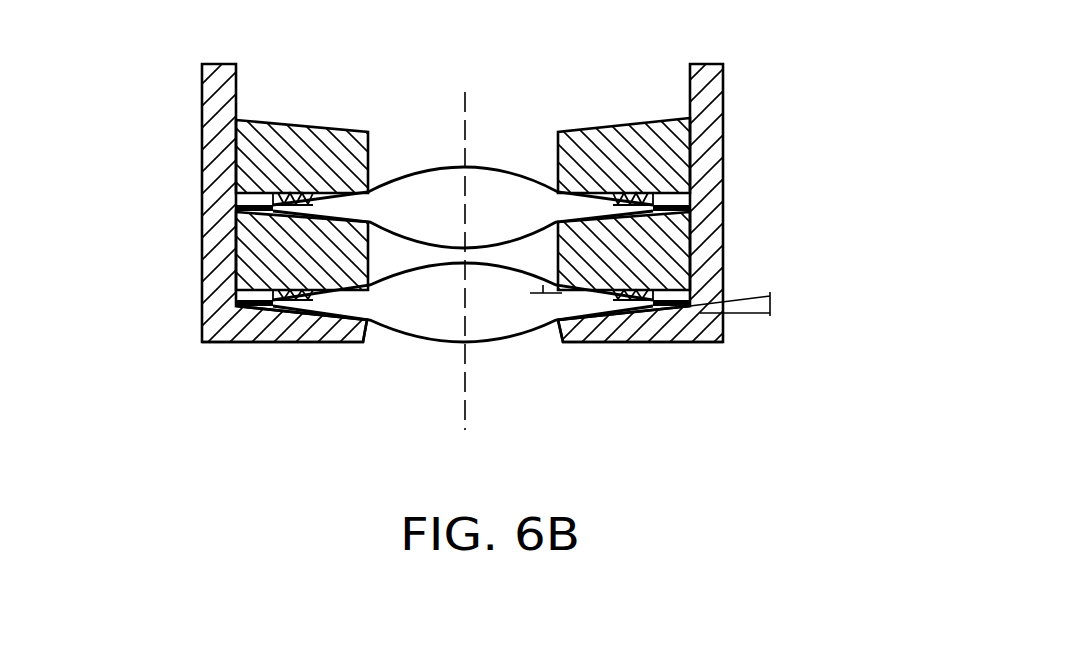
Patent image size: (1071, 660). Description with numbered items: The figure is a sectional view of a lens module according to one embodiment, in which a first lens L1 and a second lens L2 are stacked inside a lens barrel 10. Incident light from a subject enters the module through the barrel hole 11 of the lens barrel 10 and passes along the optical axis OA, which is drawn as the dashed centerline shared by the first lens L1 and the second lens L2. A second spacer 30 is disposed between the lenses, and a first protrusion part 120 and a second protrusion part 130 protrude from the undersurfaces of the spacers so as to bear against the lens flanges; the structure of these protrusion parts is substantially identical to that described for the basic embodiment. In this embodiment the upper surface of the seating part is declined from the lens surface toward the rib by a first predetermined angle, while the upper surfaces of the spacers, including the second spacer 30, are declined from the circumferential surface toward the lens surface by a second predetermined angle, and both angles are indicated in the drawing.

The lens barrel 10 is at (218, 279).
The barrel hole 11 is at (368, 338).
The second spacer 30 is at (663, 138).
The first protrusion part 120 is at (668, 283).
The second protrusion part 130 is at (685, 203).
The first lens L1 is at (506, 325).
The second lens L2 is at (432, 198).
The optical axis OA is at (465, 100).